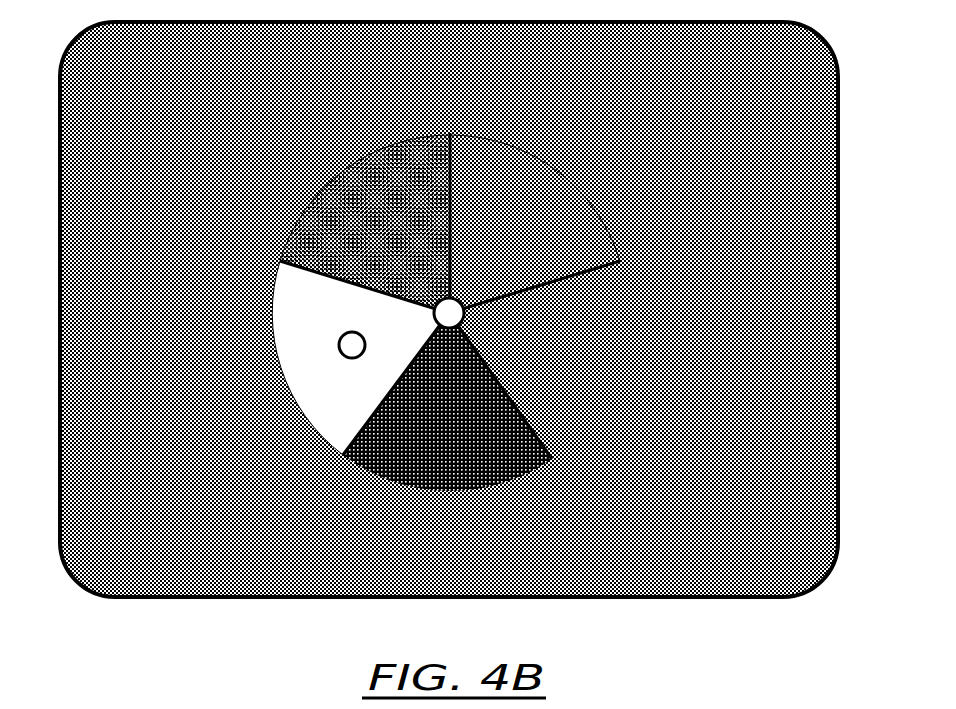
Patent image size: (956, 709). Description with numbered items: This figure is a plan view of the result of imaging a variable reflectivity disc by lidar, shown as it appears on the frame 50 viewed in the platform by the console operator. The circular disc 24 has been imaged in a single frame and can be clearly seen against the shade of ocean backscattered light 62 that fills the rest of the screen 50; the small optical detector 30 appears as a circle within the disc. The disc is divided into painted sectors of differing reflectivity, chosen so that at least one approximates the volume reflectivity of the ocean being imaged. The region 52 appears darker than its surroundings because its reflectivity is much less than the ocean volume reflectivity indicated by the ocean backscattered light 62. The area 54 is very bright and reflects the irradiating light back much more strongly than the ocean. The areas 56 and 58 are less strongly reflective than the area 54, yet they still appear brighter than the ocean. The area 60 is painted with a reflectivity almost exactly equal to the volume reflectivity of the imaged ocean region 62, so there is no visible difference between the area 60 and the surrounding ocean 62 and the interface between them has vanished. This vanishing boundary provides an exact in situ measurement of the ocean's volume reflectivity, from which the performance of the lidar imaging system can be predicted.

The disc 24 is at (322, 436).
The optical detector 30 is at (339, 340).
The frame 50 is at (565, 597).
The region 52 is at (415, 476).
The area 54 is at (332, 430).
The area 56 is at (326, 229).
The area 58 is at (580, 219).
The area 60 is at (568, 407).
The region of ocean backscattered light 62 is at (452, 582).